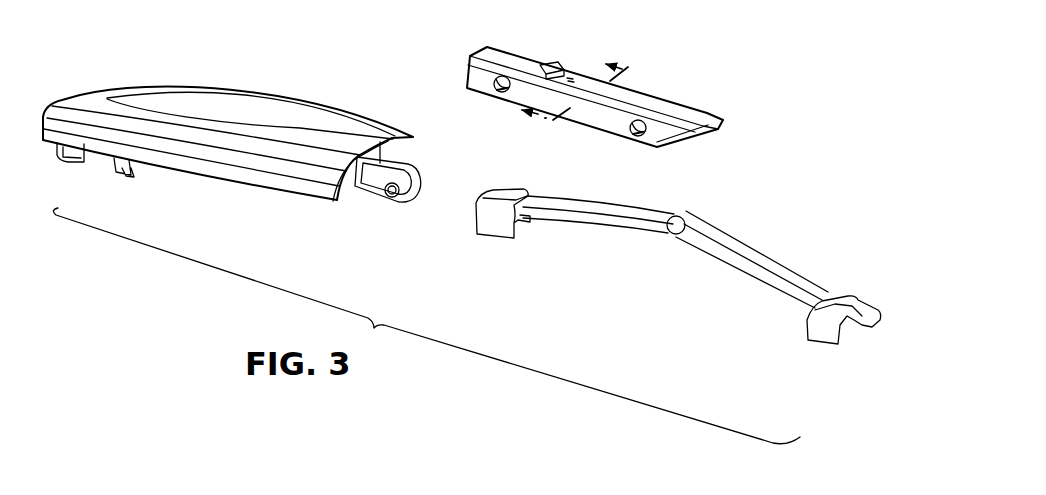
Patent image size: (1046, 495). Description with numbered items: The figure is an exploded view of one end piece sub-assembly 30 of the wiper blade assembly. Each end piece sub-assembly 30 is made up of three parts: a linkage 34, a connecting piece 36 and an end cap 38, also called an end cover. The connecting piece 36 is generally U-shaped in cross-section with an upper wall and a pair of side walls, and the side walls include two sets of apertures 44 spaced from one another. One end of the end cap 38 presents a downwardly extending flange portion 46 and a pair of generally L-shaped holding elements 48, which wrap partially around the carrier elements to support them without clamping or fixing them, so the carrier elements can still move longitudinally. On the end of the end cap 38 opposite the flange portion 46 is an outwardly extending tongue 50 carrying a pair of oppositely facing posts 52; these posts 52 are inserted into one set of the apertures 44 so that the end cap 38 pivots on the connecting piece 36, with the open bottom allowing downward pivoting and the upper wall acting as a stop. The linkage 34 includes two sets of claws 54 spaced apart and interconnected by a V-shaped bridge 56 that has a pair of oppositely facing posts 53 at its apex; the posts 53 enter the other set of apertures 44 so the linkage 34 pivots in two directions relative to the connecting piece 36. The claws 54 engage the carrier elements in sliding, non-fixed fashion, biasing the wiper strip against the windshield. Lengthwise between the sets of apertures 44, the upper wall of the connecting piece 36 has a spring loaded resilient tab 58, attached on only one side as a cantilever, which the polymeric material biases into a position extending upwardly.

The end piece sub-assembly 30 is at (800, 122).
The linkage 34 is at (790, 266).
The connecting piece 36 is at (708, 114).
The end cap 38 is at (313, 97).
The apertures 44 is at (504, 80).
The downwardly extending flange portion 46 is at (49, 140).
The L-shaped holding elements 48 is at (123, 164).
The tongue 50 is at (392, 170).
The posts 52 is at (387, 193).
The posts 53 is at (677, 221).
The claws 54 is at (493, 226).
The V-shaped bridge 56 is at (605, 207).
The resilient tab 58 is at (552, 63).